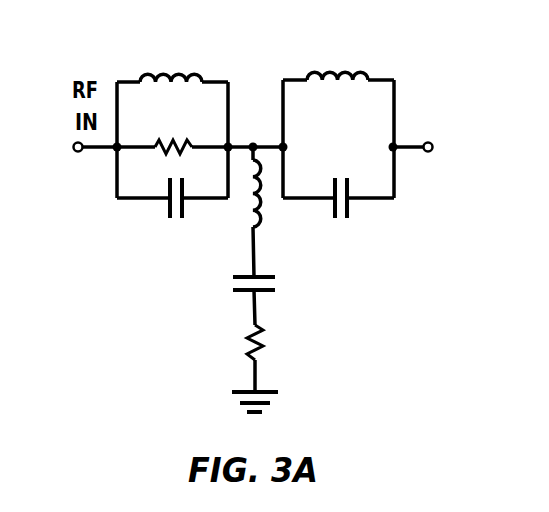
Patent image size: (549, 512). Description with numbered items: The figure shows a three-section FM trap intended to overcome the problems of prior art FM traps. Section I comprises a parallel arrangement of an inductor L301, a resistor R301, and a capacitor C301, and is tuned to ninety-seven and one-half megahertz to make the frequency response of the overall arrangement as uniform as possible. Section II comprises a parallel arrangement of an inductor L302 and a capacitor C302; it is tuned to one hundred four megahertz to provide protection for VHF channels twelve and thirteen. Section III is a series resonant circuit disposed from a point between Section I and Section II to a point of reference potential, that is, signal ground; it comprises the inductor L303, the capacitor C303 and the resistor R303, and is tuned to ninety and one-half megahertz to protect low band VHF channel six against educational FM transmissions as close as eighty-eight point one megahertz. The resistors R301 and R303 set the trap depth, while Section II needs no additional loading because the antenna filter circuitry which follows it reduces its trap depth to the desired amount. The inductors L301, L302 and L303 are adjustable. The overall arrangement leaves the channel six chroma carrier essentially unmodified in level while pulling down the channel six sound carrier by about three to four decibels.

The Section I is at (172, 102).
The Section II is at (338, 102).
The Section III is at (224, 279).
The inductor L301 is at (160, 72).
The resistor R301 is at (189, 140).
The capacitor C301 is at (167, 207).
The inductor L302 is at (330, 68).
The capacitor C302 is at (348, 217).
The inductor L303 is at (263, 230).
The capacitor C303 is at (267, 295).
The resistor R303 is at (260, 360).